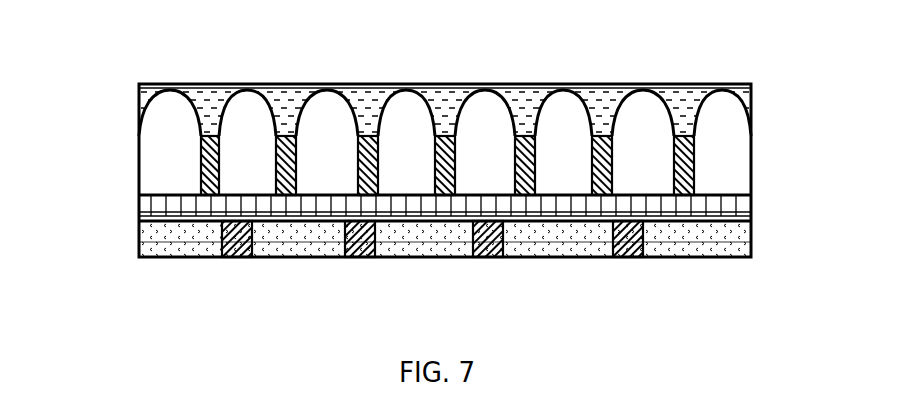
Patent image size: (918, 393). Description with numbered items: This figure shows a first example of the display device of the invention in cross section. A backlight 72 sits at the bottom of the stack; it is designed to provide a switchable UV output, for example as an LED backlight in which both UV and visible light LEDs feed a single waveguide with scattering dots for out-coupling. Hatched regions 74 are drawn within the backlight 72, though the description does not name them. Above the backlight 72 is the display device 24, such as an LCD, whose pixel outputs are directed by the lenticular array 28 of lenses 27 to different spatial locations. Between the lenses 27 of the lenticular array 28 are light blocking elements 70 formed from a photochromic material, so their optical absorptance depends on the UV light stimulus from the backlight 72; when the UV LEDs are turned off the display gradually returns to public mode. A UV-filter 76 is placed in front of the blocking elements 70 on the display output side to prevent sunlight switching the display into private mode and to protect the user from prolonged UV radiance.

The lenticular array 28 is at (429, 169).
The UV-filter 76 is at (608, 96).
The lenses 27 is at (553, 116).
The light blocking elements 70 is at (280, 136).
The display device 24 is at (139, 207).
The backlight 72 is at (397, 273).
The isolation regions 74 is at (238, 258).